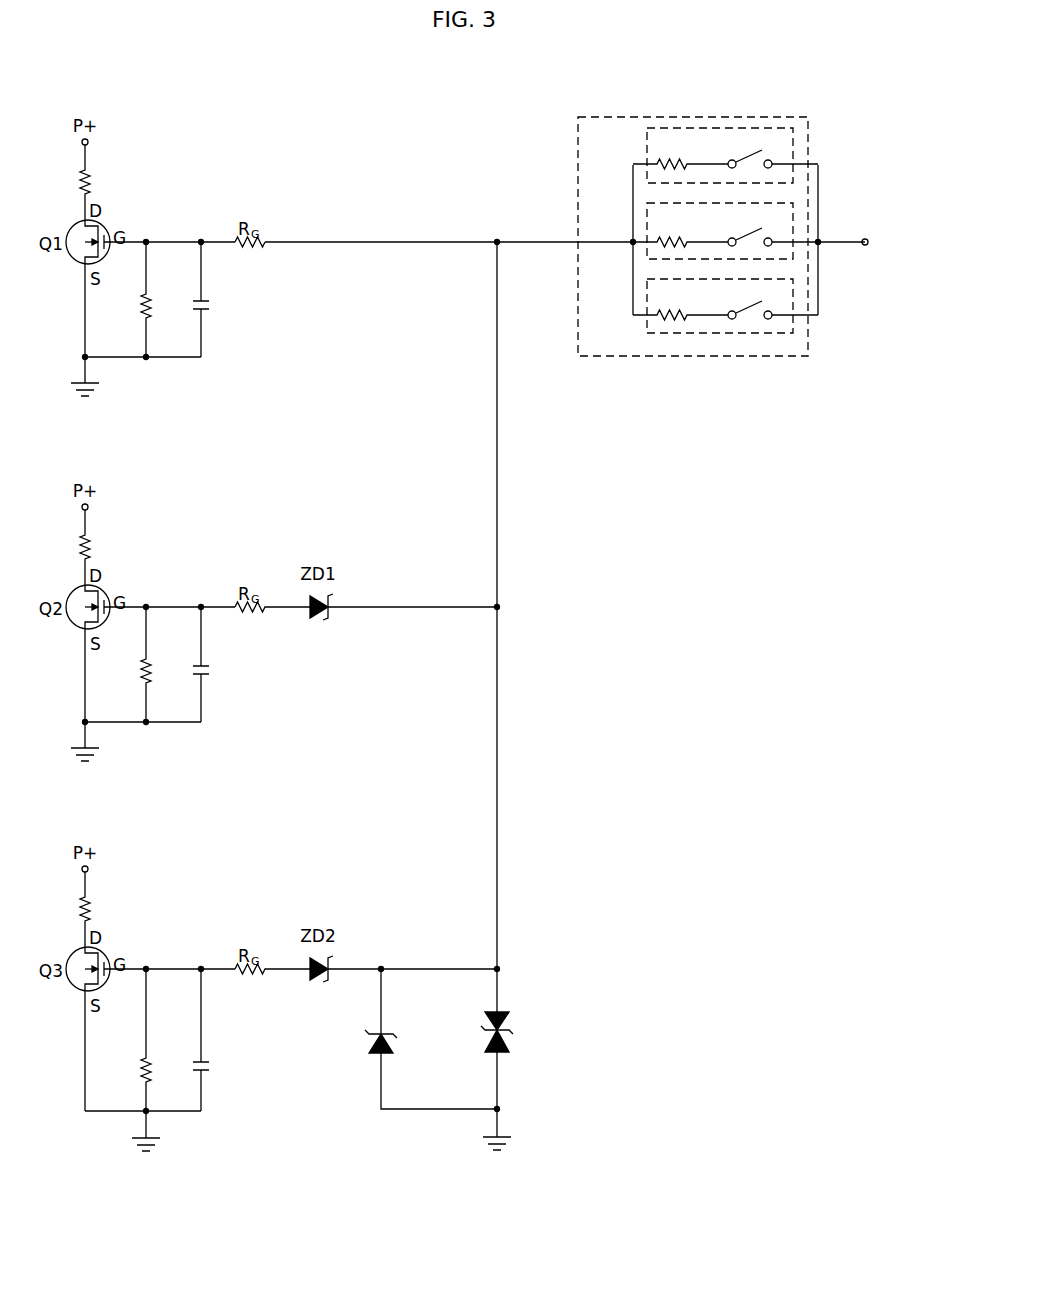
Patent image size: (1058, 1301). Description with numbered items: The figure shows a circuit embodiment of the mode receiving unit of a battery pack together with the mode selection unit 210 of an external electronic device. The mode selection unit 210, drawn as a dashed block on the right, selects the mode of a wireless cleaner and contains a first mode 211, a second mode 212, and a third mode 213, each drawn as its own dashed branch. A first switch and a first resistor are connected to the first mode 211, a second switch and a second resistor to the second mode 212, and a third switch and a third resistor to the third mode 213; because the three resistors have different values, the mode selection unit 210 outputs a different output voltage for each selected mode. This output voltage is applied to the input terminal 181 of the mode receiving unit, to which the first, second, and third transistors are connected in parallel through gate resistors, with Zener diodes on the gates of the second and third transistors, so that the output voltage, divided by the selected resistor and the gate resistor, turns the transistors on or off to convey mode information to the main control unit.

The input terminal 181 is at (496, 240).
The mode selection unit 210 is at (697, 117).
The first mode 211 is at (647, 128).
The second mode 212 is at (647, 203).
The third mode 213 is at (647, 333).